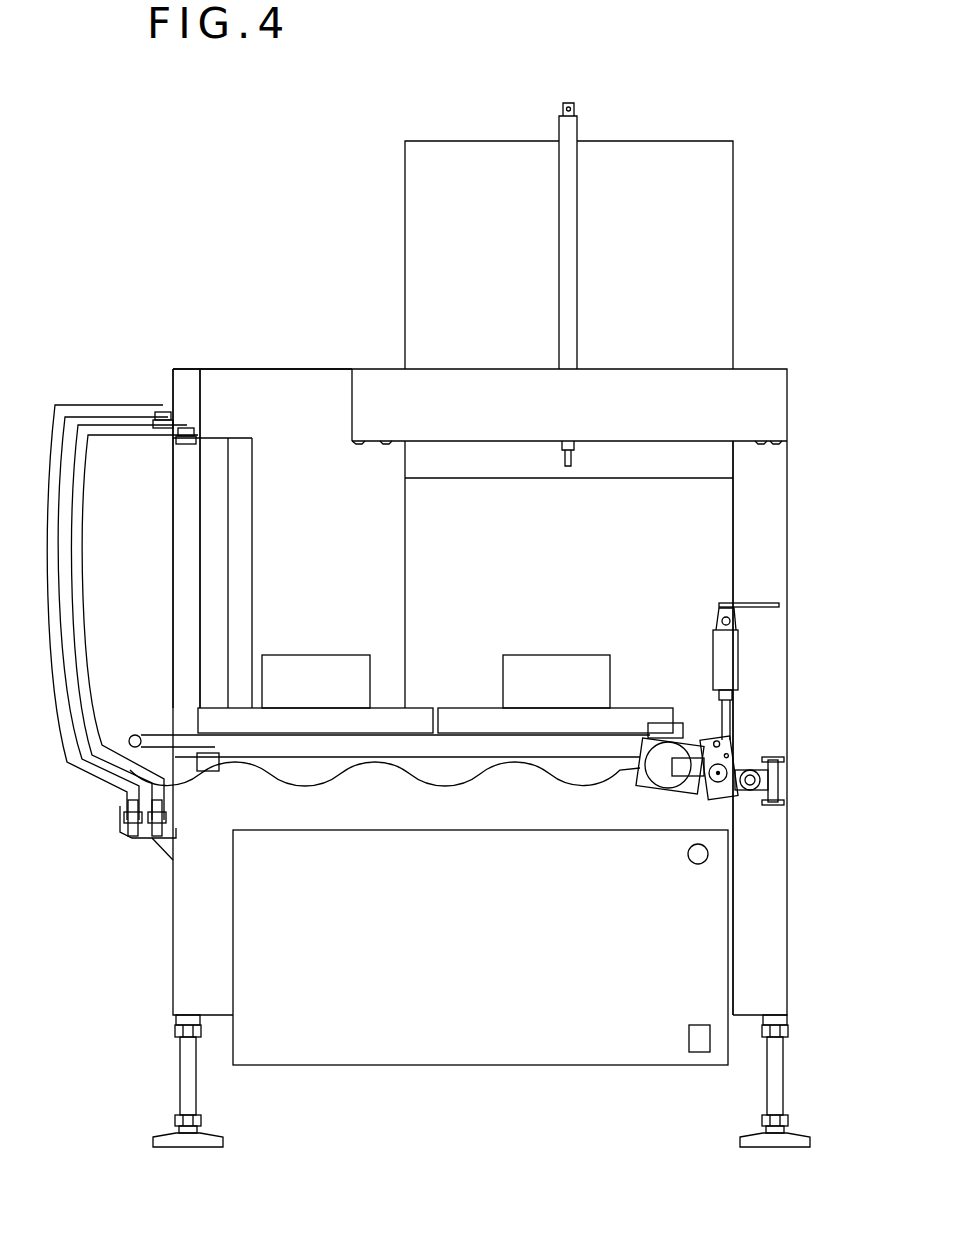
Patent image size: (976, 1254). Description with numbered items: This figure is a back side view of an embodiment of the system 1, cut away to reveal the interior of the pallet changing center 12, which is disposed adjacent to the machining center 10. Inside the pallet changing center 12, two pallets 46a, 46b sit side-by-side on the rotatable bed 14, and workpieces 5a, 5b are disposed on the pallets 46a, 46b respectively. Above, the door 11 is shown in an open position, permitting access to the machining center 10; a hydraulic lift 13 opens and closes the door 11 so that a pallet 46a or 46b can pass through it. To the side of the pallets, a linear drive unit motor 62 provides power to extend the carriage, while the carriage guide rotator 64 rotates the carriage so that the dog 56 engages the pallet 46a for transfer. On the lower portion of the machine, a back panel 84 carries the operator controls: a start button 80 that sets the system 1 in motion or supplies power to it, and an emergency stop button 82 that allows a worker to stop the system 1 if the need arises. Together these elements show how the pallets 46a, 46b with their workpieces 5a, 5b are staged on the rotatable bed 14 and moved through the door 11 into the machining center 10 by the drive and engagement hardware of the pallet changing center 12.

The system 1 is at (753, 111).
The machining center 10 is at (517, 553).
The door 11 is at (496, 253).
The pallet changing center 12 is at (285, 401).
The hydraulic lift 13 is at (566, 128).
The rotatable bed 14 is at (188, 743).
The workpiece 5a is at (546, 655).
The workpiece 5b is at (322, 655).
The pallet 46a is at (627, 726).
The pallet 46b is at (410, 712).
The dog 56 is at (647, 742).
The linear drive unit motor 62 is at (690, 795).
The carriage guide rotator 64 is at (726, 660).
The start button 80 is at (700, 856).
The emergency stop button 82 is at (699, 1040).
The back panel 84 is at (454, 970).